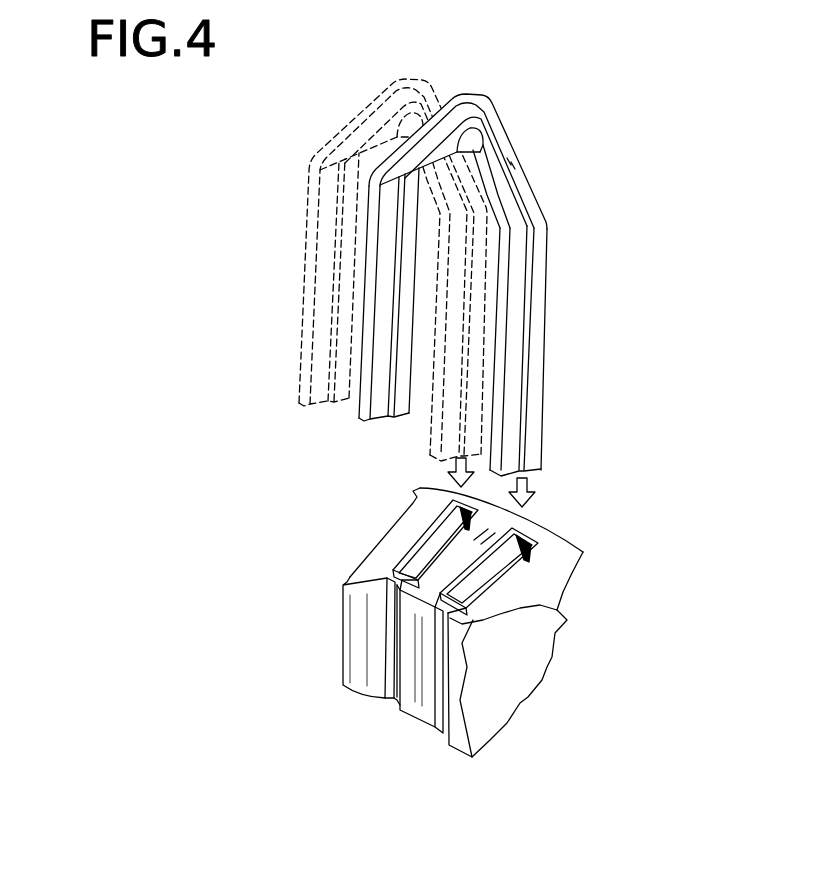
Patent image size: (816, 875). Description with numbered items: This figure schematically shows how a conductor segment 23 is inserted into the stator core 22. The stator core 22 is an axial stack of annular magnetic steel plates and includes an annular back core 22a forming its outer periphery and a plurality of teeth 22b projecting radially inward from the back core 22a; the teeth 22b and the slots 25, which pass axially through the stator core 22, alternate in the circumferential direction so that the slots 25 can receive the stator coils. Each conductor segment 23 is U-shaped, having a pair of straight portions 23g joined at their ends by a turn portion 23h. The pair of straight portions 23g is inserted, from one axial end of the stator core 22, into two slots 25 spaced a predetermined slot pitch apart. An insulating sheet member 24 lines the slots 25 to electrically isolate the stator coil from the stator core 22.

The stator core 22 is at (485, 631).
The back core 22a is at (540, 533).
The teeth 22b is at (463, 558).
The conductor segment 23 is at (429, 257).
The straight portions 23g is at (403, 283).
The turn portion 23h is at (486, 140).
The insulating sheet member 24 is at (428, 525).
The slots 25 is at (438, 690).